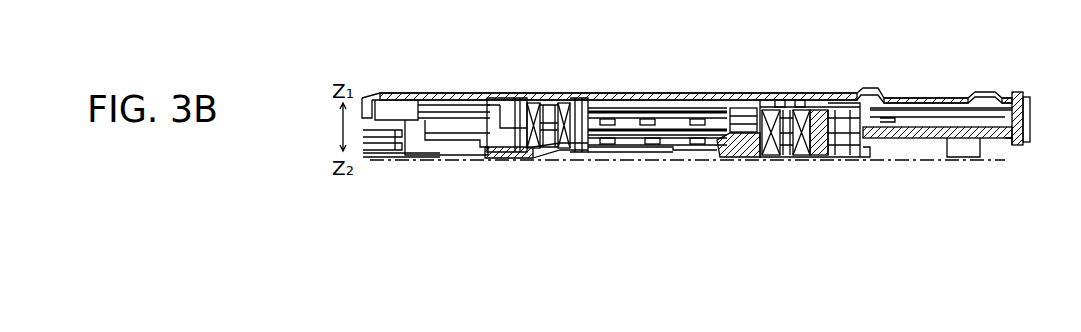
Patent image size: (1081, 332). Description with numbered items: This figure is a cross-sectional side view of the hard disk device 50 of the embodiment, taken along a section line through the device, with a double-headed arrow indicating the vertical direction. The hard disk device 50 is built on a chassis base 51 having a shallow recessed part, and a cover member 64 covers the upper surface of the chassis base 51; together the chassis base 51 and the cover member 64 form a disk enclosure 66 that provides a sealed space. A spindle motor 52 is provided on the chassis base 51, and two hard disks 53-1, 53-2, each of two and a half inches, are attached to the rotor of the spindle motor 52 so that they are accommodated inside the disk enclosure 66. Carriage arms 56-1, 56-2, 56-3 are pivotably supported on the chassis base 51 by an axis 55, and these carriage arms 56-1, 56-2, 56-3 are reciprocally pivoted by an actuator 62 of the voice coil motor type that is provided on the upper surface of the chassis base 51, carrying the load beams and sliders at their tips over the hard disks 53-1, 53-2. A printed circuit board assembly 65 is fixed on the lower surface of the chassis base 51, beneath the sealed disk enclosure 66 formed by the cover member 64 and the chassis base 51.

The hard disk device 50 is at (440, 58).
The cover member 64 is at (455, 95).
The actuator 62 is at (441, 143).
The axis 55 is at (547, 145).
The carriage arm 56-1 is at (588, 108).
The carriage arm 56-2 is at (590, 130).
The carriage arm 56-3 is at (607, 140).
The printed circuit board assembly 65 is at (703, 160).
The spindle motor 52 is at (745, 118).
The hard disk 53-1 is at (922, 108).
The hard disk 53-2 is at (960, 128).
The disk enclosure 66 is at (1035, 89).
The chassis base 51 is at (1018, 143).